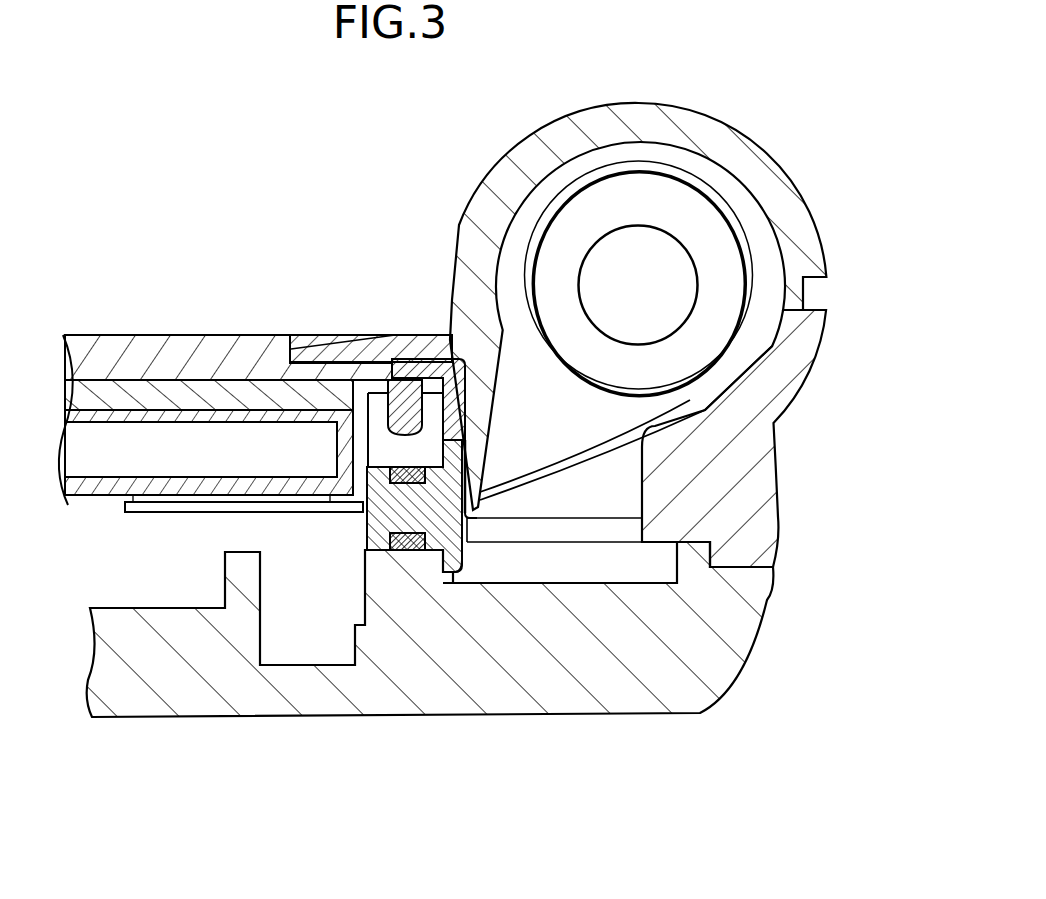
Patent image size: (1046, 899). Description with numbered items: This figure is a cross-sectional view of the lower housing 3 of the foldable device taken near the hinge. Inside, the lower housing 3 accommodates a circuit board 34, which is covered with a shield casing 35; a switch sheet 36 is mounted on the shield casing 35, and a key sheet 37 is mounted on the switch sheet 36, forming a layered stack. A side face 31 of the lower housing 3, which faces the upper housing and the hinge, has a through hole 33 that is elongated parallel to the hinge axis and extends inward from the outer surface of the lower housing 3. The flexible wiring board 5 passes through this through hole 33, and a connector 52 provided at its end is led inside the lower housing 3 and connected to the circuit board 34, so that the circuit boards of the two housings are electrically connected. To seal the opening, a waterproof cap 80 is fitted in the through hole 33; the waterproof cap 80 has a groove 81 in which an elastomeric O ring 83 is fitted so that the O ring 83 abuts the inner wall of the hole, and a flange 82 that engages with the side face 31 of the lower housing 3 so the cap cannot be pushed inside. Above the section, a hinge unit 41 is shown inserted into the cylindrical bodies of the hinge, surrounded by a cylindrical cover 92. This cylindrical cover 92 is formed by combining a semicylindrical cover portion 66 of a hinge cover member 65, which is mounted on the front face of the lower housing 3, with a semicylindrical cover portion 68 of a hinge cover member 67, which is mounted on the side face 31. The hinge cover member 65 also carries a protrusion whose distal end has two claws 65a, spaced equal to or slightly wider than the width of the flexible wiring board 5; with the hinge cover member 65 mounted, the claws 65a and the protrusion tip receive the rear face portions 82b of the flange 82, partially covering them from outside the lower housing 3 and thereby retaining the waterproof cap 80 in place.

The lower housing 3 is at (197, 685).
The flexible wiring board 5 is at (662, 396).
The side face 31 is at (455, 584).
The through hole 33 is at (362, 543).
The circuit board 34 is at (200, 475).
The shield casing 35 is at (166, 412).
The switch sheet 36 is at (138, 397).
The key sheet 37 is at (100, 358).
The hinge unit 41 is at (647, 253).
The connector 52 is at (258, 500).
The hinge cover member 65 is at (375, 340).
The claw 65a is at (478, 440).
The semicylindrical cover portion 66 is at (803, 255).
The hinge cover member 67 is at (758, 540).
The semicylindrical cover portion 68 is at (795, 327).
The waterproof cap 80 is at (387, 517).
The groove 81 is at (397, 551).
The flange 82 is at (452, 400).
The rear face portion 82b is at (480, 518).
The O ring 83 is at (412, 432).
The cylindrical cover 92 is at (908, 223).